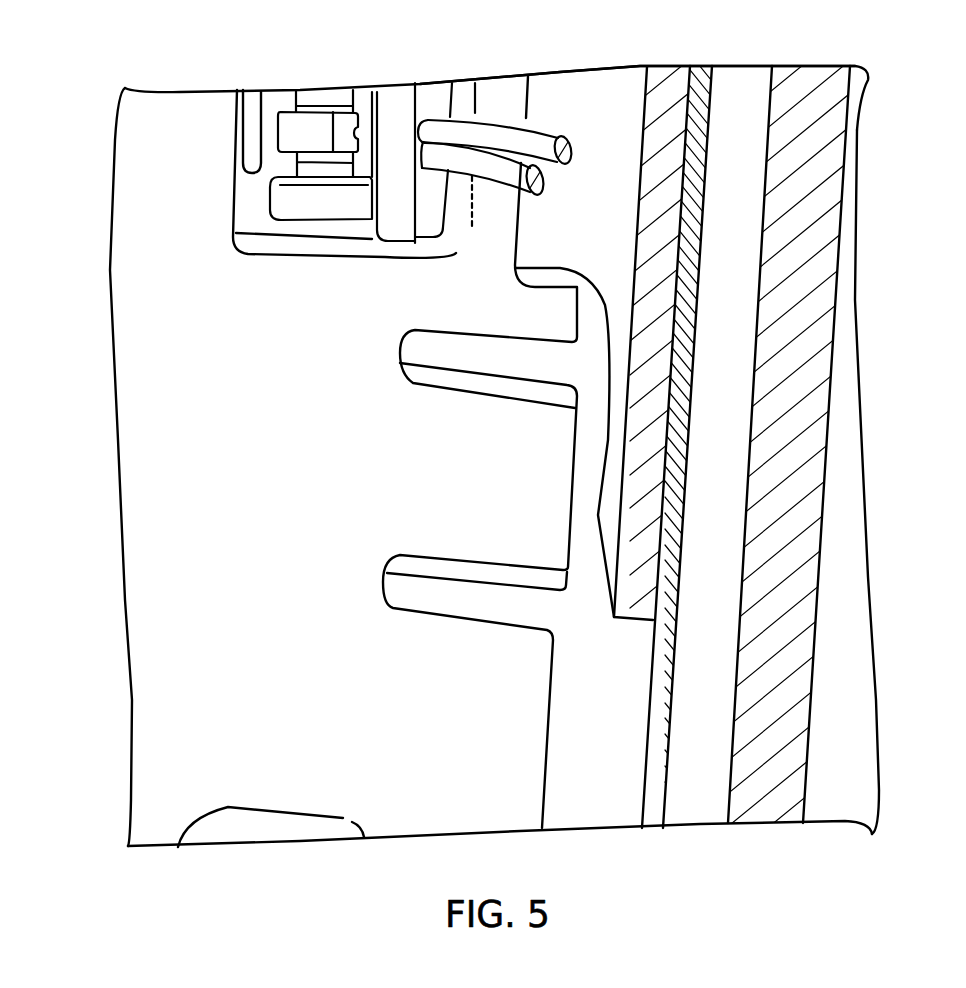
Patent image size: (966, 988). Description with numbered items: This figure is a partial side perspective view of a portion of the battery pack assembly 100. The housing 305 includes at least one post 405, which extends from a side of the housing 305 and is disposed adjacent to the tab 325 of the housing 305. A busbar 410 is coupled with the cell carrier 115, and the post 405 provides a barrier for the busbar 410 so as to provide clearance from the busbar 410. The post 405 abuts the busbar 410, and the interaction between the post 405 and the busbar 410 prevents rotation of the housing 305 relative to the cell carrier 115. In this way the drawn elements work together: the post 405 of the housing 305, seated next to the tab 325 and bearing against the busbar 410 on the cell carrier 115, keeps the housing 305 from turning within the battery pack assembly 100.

The battery pack assembly 100 is at (37, 117).
The cell carrier 115 is at (663, 657).
The housing 305 is at (137, 512).
The tab 325 is at (555, 508).
The post 405 is at (556, 308).
The busbar 410 is at (594, 64).